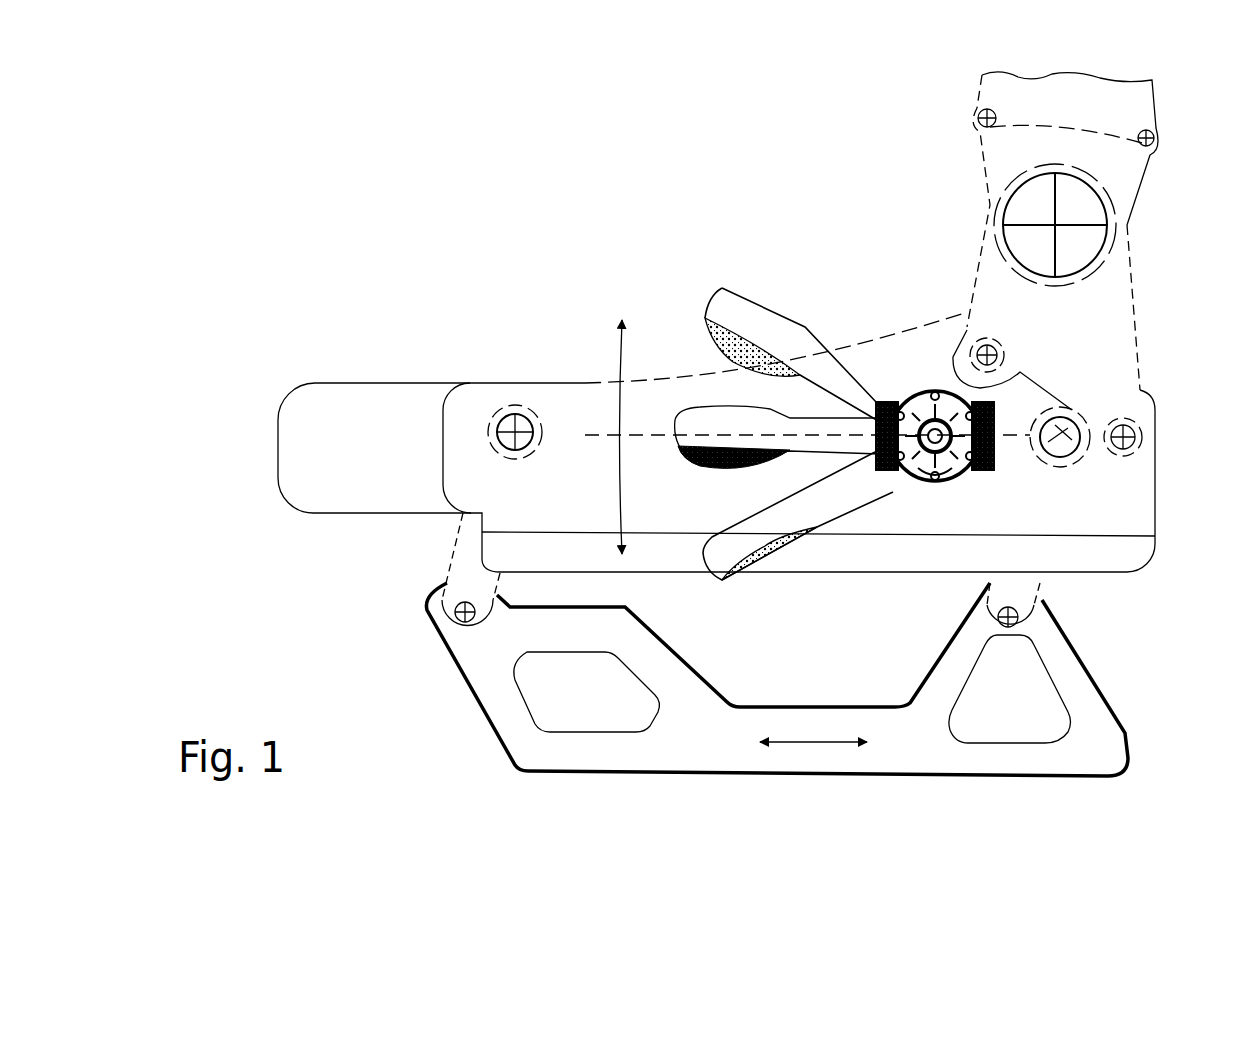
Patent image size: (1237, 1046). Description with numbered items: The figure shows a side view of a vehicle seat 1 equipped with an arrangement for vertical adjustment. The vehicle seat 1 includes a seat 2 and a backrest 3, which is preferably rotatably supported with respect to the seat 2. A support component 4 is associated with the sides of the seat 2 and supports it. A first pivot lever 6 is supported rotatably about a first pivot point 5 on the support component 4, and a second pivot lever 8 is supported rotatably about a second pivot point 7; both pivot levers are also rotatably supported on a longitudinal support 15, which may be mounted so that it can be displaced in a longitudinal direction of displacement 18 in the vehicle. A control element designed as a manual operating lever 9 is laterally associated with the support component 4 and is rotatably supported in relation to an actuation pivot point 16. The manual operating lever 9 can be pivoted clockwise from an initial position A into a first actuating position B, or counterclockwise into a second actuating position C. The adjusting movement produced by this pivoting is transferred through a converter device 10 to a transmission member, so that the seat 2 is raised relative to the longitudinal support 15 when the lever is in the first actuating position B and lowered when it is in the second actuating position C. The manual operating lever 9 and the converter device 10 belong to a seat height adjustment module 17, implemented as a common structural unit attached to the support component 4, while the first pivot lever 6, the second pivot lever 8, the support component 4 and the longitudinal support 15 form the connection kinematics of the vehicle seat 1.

The vehicle seat 1 is at (582, 132).
The seat 2 is at (384, 397).
The backrest 3 is at (1135, 110).
The support component 4 is at (572, 400).
The first pivot point 5 is at (1076, 418).
The first pivot lever 6 is at (1025, 594).
The second pivot point 7 is at (516, 424).
The second pivot lever 8 is at (466, 565).
The manual operating lever 9 is at (827, 440).
The converter device 10 is at (923, 383).
The longitudinal support 15 is at (657, 750).
The actuation pivot point 16 is at (942, 460).
The seat height adjustment module 17 is at (839, 275).
The longitudinal direction of displacement 18 is at (800, 752).
The initial position A is at (688, 425).
The first actuating position B is at (748, 318).
The second actuating position C is at (727, 552).